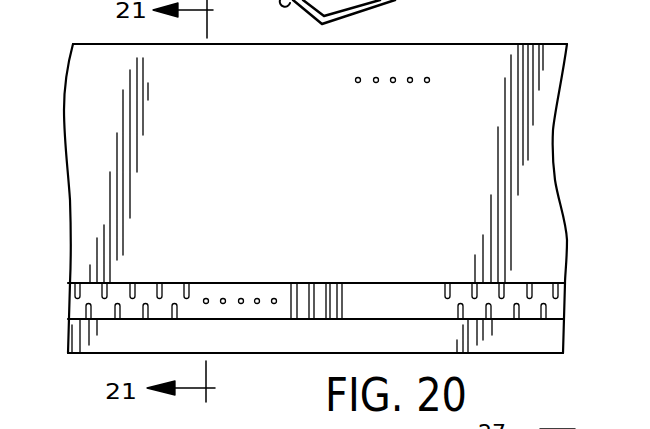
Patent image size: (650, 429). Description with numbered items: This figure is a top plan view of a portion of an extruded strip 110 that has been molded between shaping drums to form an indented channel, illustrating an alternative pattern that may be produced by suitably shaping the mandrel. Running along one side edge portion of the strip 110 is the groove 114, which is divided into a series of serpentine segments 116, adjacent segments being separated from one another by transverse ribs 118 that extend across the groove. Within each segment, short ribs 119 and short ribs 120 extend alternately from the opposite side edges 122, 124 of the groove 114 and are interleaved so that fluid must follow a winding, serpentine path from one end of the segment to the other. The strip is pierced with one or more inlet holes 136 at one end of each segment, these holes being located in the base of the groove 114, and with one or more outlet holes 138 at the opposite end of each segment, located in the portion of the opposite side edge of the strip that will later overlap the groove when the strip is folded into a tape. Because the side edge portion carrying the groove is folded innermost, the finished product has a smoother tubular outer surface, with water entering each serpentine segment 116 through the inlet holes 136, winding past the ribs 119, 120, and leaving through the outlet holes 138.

The strip 110 is at (541, 181).
The groove 114 is at (396, 293).
The serpentine segments 116 is at (121, 278).
The transverse ribs 118 is at (342, 292).
The short ribs 119 is at (470, 292).
The short ribs 120 is at (490, 304).
The side edge of the groove 122 is at (517, 284).
The side edge of the groove 124 is at (553, 320).
The inlet holes 136 is at (257, 298).
The outlet holes 138 is at (377, 78).